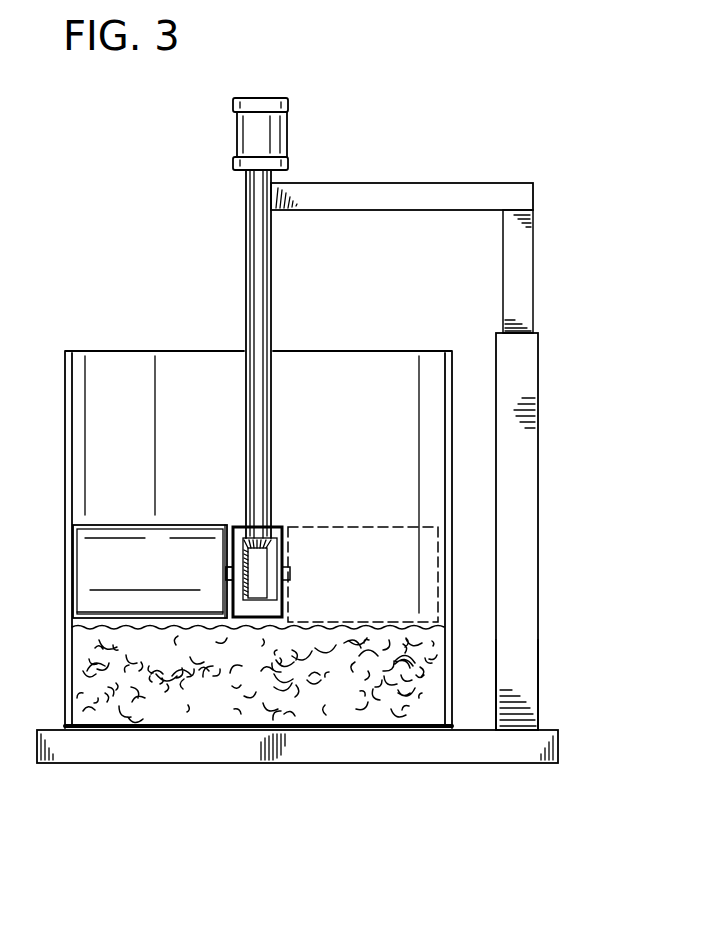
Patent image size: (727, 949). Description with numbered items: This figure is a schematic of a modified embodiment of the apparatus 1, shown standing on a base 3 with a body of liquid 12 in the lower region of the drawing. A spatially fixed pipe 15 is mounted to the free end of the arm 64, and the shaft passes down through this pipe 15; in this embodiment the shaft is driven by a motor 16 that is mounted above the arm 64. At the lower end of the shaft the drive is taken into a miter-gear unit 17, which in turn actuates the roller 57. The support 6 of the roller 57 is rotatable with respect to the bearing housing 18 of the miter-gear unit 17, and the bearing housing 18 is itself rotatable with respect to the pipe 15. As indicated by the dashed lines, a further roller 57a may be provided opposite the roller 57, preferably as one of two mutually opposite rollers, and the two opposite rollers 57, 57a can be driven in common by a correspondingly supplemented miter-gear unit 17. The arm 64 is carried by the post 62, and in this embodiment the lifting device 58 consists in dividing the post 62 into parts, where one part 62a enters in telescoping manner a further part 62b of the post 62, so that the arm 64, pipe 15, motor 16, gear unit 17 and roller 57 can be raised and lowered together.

The washing apparatus tank 1 is at (56, 405).
The base 3 is at (113, 748).
The support 6 is at (228, 572).
The cleaning liquid 12 is at (325, 690).
The pipe 15 is at (273, 262).
The motor 16 is at (243, 131).
The miter-gear unit 17 is at (238, 516).
The bearing housing 18 is at (289, 551).
The roller 57 is at (115, 550).
The further roller 57a is at (360, 527).
The lifting device 58 is at (560, 324).
The post 62 is at (548, 386).
The post part 62a is at (503, 263).
The further post part 62b is at (520, 501).
The arm 64 is at (386, 192).